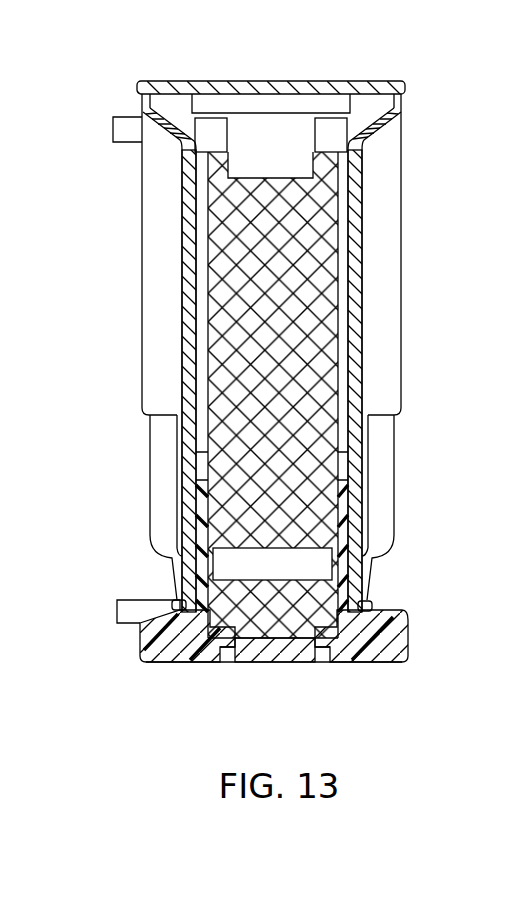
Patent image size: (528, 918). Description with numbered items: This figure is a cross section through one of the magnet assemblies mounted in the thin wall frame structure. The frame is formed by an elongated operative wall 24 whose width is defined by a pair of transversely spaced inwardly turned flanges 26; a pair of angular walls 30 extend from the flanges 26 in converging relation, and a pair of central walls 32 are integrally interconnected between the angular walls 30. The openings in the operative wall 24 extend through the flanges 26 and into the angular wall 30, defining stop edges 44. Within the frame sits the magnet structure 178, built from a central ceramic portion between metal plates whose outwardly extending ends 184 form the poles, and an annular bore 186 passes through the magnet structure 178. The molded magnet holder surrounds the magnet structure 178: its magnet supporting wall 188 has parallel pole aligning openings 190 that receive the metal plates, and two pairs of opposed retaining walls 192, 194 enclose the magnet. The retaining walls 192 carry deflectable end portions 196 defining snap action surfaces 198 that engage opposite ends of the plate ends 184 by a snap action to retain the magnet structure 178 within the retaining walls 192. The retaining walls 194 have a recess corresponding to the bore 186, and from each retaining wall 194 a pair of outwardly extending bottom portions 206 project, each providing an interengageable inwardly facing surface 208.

The operative wall 24 is at (256, 86).
The inwardly turned flange 26 is at (142, 116).
The angular wall 30 is at (168, 130).
The central wall 32 is at (190, 290).
The stop edge 44 is at (368, 611).
The magnet structure 178 is at (341, 373).
The outwardly extending end 184 is at (215, 145).
The annular bore 186 is at (334, 563).
The magnet supporting wall 188 is at (288, 646).
The pole aligning opening 190 is at (227, 664).
The retaining wall 192 is at (342, 233).
The retaining wall 194 is at (342, 513).
The deflectable end portion 196 is at (213, 128).
The snap action surface 198 is at (192, 165).
The outwardly extending bottom portion 206 is at (382, 642).
The inwardly facing surface 208 is at (180, 601).